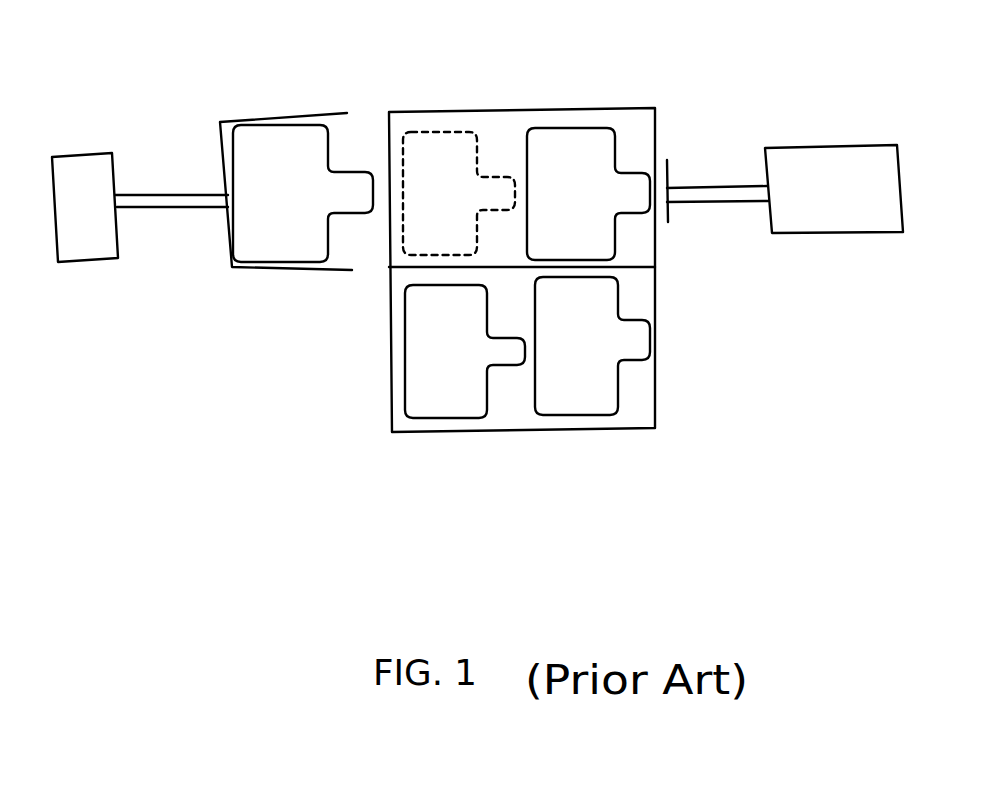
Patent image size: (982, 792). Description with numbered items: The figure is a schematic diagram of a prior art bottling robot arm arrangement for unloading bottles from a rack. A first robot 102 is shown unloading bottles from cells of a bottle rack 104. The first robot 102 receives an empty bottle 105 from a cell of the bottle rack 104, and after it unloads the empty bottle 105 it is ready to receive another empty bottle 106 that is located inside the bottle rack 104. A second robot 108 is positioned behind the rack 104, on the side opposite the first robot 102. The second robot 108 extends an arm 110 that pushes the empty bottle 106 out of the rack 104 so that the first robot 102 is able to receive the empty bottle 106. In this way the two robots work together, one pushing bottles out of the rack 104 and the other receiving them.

The first robot 102 is at (108, 126).
The bottle rack 104 is at (529, 442).
The empty bottle 105 is at (297, 123).
The empty bottle 106 is at (580, 128).
The second robot 108 is at (820, 145).
The arm 110 is at (717, 203).